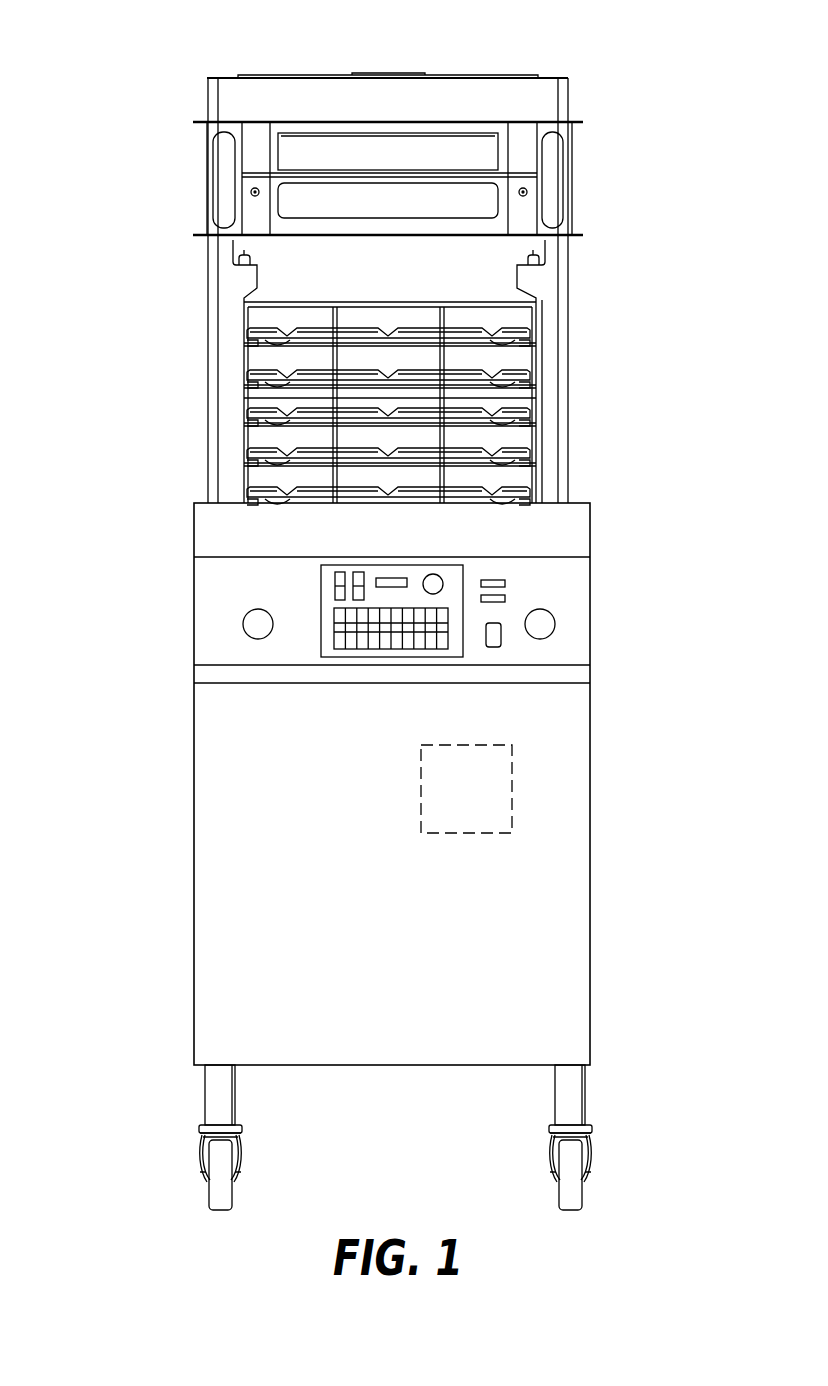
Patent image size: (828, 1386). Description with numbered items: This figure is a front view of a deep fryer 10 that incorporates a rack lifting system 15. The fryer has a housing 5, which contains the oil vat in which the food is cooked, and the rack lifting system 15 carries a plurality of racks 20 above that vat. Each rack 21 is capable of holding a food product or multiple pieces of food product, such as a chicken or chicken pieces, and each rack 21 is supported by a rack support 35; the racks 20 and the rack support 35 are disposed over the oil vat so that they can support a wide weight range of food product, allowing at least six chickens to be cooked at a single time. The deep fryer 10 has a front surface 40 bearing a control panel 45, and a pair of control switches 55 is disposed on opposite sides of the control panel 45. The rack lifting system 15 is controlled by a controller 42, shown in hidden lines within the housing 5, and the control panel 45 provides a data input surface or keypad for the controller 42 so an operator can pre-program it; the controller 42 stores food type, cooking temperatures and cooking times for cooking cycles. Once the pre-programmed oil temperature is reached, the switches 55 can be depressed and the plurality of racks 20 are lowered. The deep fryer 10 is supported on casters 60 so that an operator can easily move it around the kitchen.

The deep fryer 10 is at (115, 62).
The rack support 35 is at (520, 151).
The rack lifting system 15 is at (548, 323).
The plurality of racks 20 is at (260, 410).
The rack 21 is at (528, 373).
The control panel 45 is at (222, 578).
The control switches 55 is at (243, 624).
The housing 5 is at (590, 729).
The controller 42 is at (512, 780).
The front surface 40 is at (530, 912).
The casters 60 is at (220, 1210).